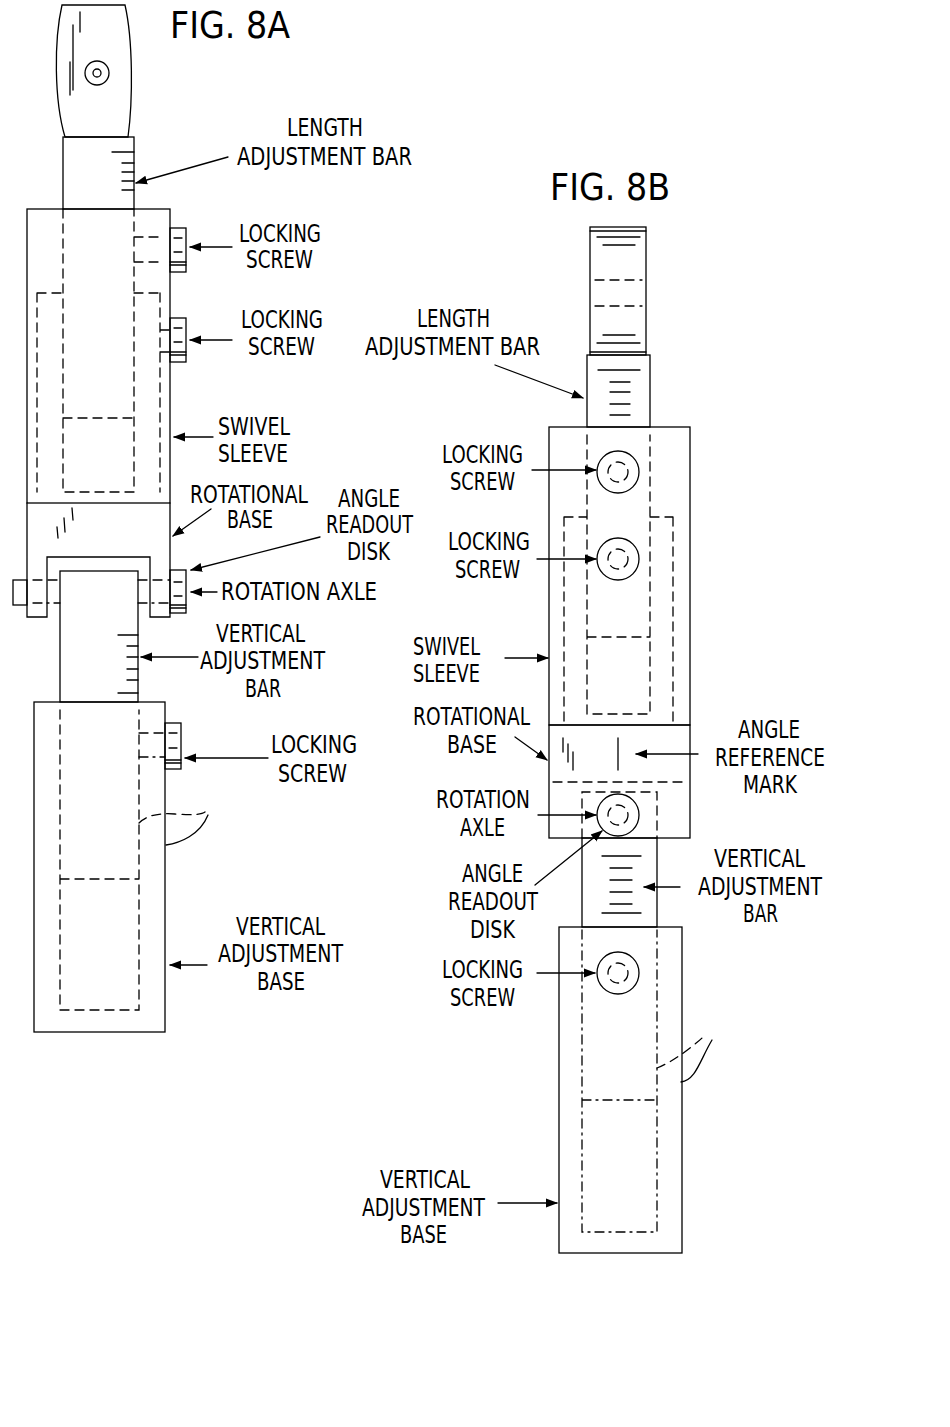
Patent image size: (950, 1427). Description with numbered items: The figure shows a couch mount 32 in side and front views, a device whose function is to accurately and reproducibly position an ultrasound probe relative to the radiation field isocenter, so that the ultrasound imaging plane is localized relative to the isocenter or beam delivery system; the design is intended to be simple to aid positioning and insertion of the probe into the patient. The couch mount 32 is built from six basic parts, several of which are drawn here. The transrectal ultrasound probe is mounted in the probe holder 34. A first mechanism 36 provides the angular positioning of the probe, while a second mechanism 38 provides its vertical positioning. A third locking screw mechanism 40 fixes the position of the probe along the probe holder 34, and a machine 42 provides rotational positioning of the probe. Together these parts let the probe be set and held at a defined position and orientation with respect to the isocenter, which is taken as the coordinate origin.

In FIG. 8A, the couch mount 32 is at (198, 901).
In FIG. 8B, the couch mount 32 is at (537, 1078).
In FIG. 8A, the probe holder 34 is at (136, 160).
In FIG. 8B, the probe holder 34 is at (658, 392).
In FIG. 8A, the first mechanism 36 is at (186, 748).
In FIG. 8B, the first mechanism 36 is at (641, 973).
In FIG. 8A, the second mechanism 38 is at (187, 815).
In FIG. 8B, the second mechanism 38 is at (691, 1043).
In FIG. 8A, the third locking screw mechanism 40 is at (204, 216).
In FIG. 8B, the third locking screw mechanism 40 is at (596, 457).
In FIG. 8B, the machine for rotational positioning 42 is at (694, 571).